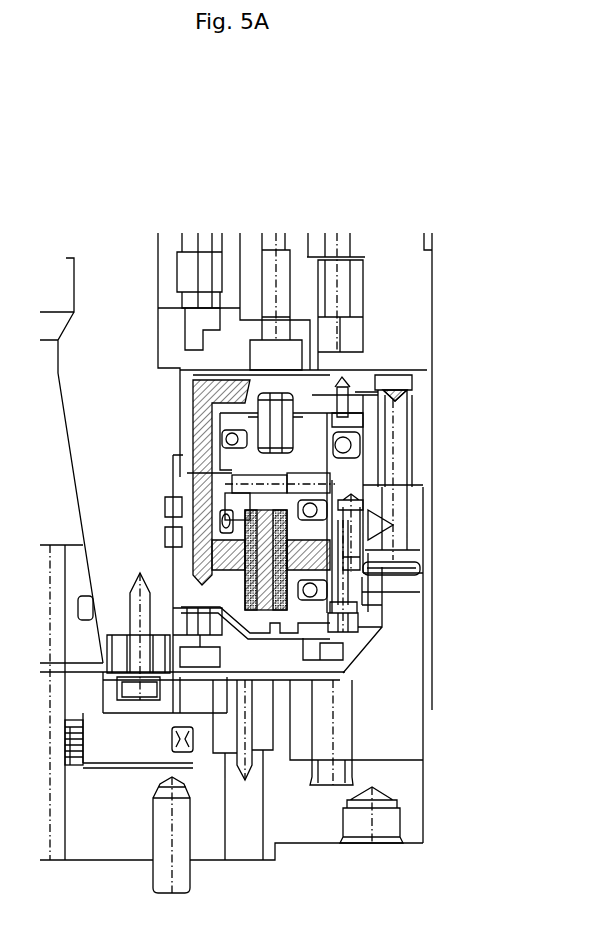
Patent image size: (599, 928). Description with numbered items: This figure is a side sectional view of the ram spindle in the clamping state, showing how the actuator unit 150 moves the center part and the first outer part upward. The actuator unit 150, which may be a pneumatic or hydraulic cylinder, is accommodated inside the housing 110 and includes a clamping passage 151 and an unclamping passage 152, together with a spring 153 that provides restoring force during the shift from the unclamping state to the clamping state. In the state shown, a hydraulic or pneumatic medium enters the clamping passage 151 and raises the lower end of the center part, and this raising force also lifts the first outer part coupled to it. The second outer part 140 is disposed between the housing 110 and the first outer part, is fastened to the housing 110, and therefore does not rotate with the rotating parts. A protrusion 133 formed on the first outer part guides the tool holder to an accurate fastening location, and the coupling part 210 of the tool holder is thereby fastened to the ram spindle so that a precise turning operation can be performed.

The actuator unit 150 is at (65, 183).
The clamping passage 151 is at (193, 422).
The unclamping passage 152 is at (335, 385).
The spring 153 is at (258, 512).
The housing 110 is at (418, 440).
The second outer part 140 is at (407, 522).
The protrusion 133 is at (368, 603).
The coupling part 210 is at (393, 677).